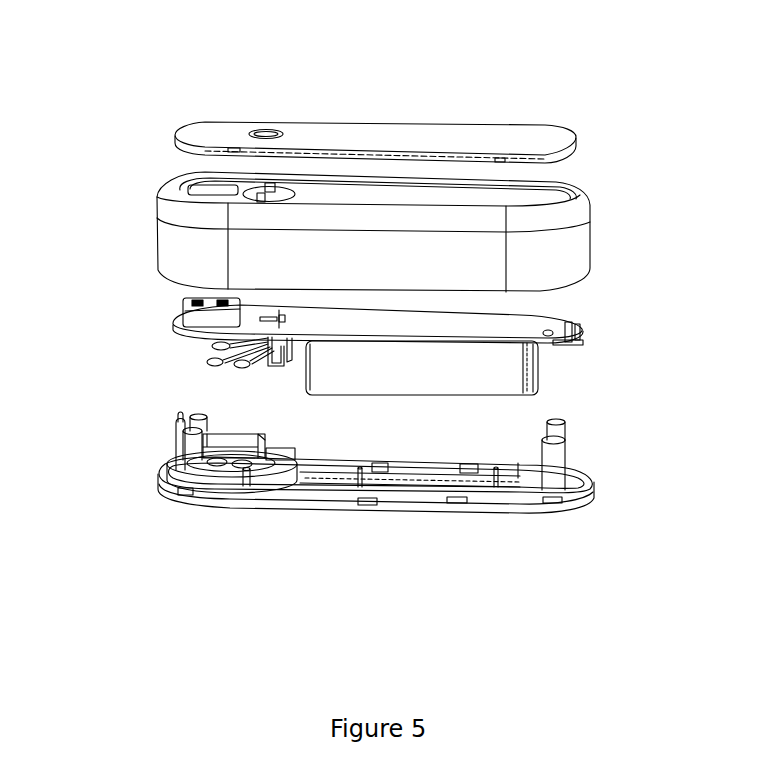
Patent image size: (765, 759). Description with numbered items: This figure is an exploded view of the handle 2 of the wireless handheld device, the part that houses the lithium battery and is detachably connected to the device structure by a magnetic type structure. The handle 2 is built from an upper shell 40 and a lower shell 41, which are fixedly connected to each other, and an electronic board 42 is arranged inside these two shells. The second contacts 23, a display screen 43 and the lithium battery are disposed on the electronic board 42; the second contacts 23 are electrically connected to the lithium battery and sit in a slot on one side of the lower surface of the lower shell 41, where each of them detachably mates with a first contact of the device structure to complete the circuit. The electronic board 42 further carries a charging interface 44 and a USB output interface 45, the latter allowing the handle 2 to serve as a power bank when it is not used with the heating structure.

The handle 2 is at (577, 217).
The second contacts 23 is at (217, 360).
The upper shell 40 is at (305, 243).
The lower shell 41 is at (307, 502).
The electronic board 42 is at (307, 314).
The display screen 43 is at (328, 133).
The charging interface 44 is at (580, 328).
The USB output interface 45 is at (277, 351).